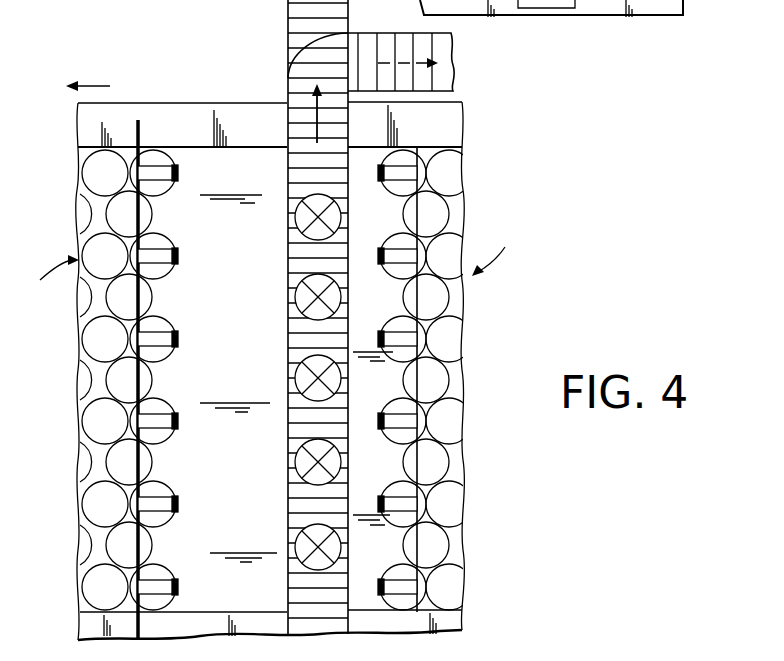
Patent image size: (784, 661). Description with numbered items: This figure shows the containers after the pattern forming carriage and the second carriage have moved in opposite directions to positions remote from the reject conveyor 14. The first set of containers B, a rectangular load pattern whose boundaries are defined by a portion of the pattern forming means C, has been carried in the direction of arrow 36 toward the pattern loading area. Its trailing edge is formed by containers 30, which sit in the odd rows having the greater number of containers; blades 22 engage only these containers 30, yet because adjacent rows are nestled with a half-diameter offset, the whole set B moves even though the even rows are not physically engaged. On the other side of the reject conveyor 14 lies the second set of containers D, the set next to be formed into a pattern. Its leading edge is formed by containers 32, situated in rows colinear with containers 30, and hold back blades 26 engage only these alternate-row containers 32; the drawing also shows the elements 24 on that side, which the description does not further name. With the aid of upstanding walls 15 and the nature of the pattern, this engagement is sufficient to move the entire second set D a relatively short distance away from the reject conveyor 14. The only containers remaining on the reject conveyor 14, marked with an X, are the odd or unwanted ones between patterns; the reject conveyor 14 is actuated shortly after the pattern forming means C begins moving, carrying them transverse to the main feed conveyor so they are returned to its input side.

The reject conveyor 14 is at (297, 22).
The upstanding walls 15 is at (455, 125).
The blades 22 is at (175, 175).
The right heat-exchange tubes 24 is at (380, 172).
The hold back blades / additional conveyor 26 is at (443, 82).
The containers 30 is at (157, 187).
The containers 32 is at (402, 192).
The arrow 36 is at (105, 85).
The first set of containers B is at (48, 280).
The pattern forming means C is at (122, 132).
The second set of containers D is at (494, 244).